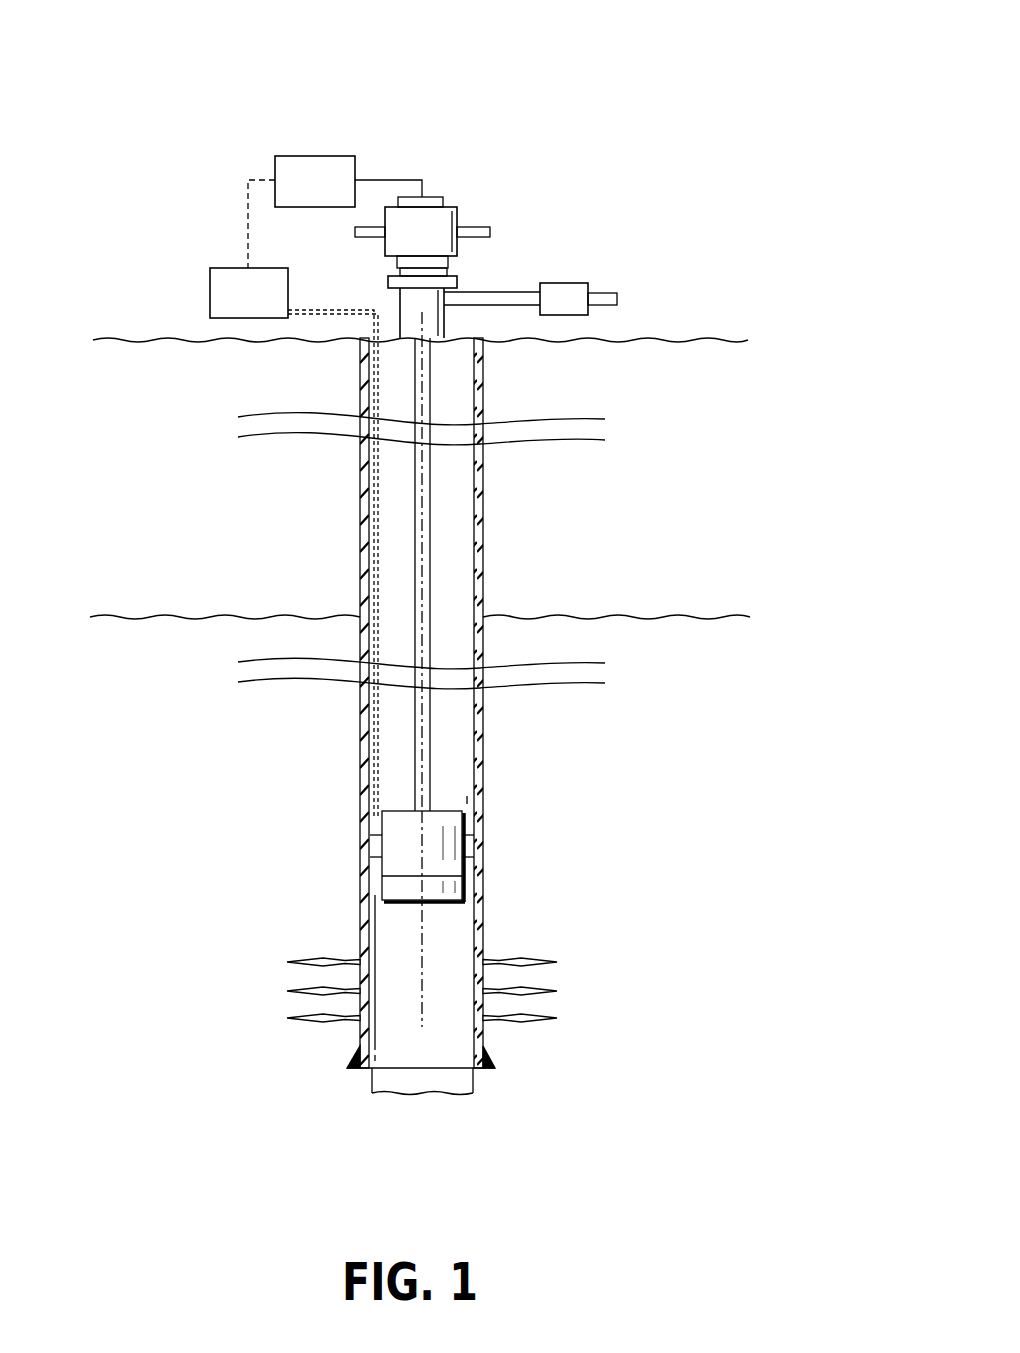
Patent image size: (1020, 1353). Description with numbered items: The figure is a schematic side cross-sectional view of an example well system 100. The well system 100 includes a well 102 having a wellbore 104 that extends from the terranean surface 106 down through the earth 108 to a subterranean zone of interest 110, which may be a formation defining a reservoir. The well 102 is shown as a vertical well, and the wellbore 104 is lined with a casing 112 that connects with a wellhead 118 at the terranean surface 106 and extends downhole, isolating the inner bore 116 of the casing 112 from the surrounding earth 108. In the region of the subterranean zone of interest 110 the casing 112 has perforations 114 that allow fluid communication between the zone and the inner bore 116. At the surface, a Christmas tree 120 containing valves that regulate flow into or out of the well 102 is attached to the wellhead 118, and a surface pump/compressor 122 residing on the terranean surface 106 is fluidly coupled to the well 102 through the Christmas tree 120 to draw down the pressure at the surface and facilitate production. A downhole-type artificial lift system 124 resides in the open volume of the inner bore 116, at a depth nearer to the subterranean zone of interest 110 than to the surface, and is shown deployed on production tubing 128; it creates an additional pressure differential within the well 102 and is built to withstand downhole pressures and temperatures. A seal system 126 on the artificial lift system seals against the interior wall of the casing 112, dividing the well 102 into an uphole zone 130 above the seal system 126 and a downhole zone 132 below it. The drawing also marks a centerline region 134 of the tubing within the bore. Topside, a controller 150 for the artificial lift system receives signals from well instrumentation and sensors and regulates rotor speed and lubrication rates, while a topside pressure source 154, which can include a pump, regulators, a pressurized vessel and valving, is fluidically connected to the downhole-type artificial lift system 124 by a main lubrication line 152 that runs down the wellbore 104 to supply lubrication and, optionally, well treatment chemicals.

The well system 100 is at (724, 102).
The well 102 is at (545, 392).
The wellbore 104 is at (396, 551).
The terranean surface 106 is at (145, 338).
The earth 108 is at (725, 547).
The subterranean zone of interest 110 is at (679, 738).
The casing 112 is at (366, 458).
The perforations 114 is at (287, 993).
The inner bore 116 is at (448, 542).
The wellhead 118 is at (384, 272).
The Christmas tree 120 is at (470, 216).
The surface pump/compressor 122 is at (574, 288).
The downhole-type artificial lift system 124 is at (404, 806).
The seal system 126 is at (378, 858).
The production tubing 128 is at (432, 573).
The uphole zone 130 is at (452, 782).
The downhole zone 132 is at (445, 940).
The tubing bore 134 is at (432, 725).
The controller 150 is at (284, 159).
The main lubrication line 152 is at (375, 490).
The topside pressure source 154 is at (222, 272).